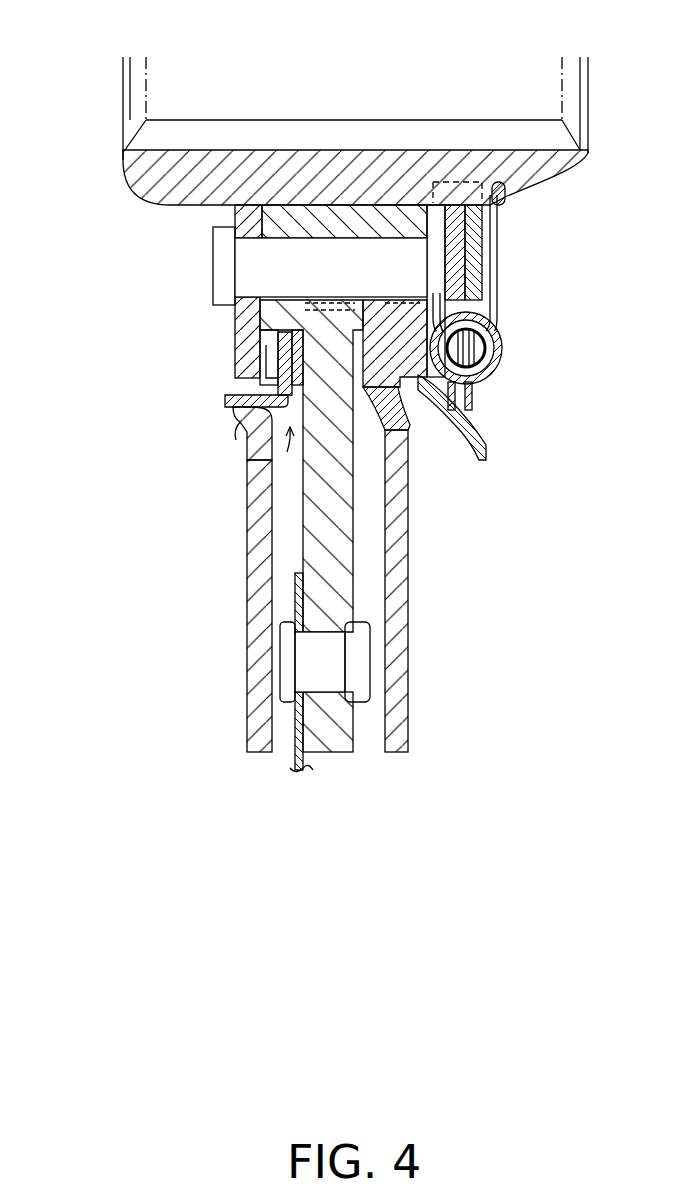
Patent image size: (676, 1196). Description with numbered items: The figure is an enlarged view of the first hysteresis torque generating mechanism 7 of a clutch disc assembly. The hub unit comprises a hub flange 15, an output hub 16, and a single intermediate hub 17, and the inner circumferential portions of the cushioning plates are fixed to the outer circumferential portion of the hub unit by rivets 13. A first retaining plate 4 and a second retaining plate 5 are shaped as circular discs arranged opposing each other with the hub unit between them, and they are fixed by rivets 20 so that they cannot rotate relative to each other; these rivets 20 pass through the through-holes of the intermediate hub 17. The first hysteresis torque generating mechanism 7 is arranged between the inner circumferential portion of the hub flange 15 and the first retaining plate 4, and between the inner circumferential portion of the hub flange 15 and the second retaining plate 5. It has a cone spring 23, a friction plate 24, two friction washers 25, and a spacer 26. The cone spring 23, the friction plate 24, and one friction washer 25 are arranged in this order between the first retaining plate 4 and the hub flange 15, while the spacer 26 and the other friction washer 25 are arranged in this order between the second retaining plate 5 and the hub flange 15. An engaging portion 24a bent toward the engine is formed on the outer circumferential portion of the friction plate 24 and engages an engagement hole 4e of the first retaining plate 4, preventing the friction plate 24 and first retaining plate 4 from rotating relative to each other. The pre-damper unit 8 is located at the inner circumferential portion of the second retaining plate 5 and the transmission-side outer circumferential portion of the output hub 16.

The first retaining plate 4 is at (258, 687).
The engagement hole 4e is at (247, 415).
The second retaining plate 5 is at (402, 645).
The first hysteresis torque generating mechanism 7 is at (247, 510).
The pre-damper unit 8 is at (520, 322).
The rivets 13 is at (313, 653).
The hub flange 15 is at (335, 553).
The output hub 16 is at (150, 177).
The intermediate hub 17 is at (300, 213).
The rivets 20 is at (230, 268).
The cone spring 23 is at (267, 343).
The friction plate 24 is at (290, 367).
The engaging portion 24a is at (227, 405).
The friction washers 25 is at (287, 375).
The spacer 26 is at (488, 367).